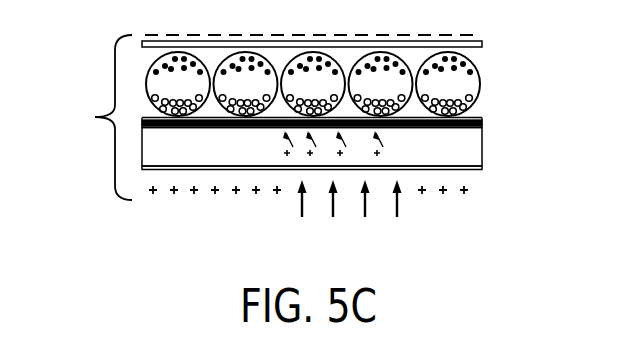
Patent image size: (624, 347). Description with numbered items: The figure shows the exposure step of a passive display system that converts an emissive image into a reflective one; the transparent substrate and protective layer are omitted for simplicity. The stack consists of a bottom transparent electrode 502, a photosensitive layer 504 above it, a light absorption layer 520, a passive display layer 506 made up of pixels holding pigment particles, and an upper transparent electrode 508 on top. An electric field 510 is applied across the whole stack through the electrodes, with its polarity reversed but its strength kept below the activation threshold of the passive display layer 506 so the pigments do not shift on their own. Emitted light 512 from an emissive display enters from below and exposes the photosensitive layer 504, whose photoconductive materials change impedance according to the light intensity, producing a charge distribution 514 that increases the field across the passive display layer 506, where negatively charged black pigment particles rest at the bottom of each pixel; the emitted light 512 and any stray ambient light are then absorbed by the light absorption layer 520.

The bottom transparent electrode 502 is at (482, 167).
The photosensitive layer 504 is at (480, 148).
The passive display layer 506 is at (480, 82).
The upper transparent electrode 508 is at (483, 44).
The electric field 510 is at (97, 117).
The emitted light 512 is at (410, 200).
The charged particles migration 514 is at (278, 137).
The light absorption layer 520 is at (480, 120).